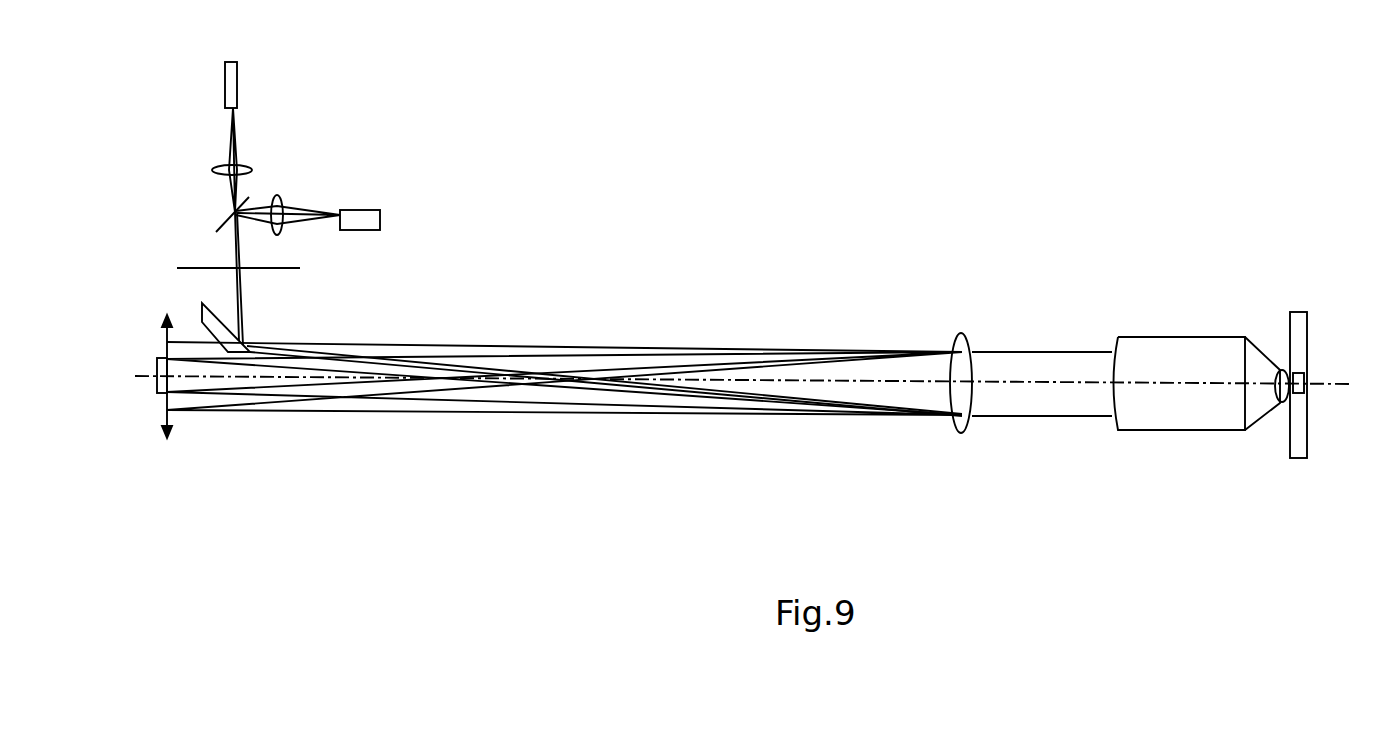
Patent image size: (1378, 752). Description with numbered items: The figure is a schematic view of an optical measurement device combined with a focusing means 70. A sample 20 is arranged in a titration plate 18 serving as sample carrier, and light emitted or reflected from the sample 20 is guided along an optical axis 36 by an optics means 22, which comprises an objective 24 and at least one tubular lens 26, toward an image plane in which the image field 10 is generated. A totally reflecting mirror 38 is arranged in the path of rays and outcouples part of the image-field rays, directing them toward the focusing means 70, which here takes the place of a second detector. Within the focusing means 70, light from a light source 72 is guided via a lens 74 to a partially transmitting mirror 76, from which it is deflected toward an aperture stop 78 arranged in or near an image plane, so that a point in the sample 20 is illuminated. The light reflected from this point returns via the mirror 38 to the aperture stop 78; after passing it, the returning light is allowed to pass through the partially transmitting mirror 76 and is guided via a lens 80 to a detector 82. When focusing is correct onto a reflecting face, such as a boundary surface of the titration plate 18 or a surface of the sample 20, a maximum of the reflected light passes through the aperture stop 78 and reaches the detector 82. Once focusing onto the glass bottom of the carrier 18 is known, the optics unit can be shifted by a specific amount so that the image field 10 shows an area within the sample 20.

The image field 10 is at (163, 347).
The titration plate 18 is at (1297, 325).
The sample 20 is at (1308, 383).
The optics means 22 is at (1053, 326).
The objective 24 is at (1197, 355).
The tubular lens 26 is at (962, 340).
The optical axis 36 is at (1047, 390).
The totally reflecting mirror 38 is at (210, 323).
The focusing means 70 is at (167, 150).
The light source 72 is at (372, 212).
The lens 74 is at (283, 202).
The partially transmitting mirror 76 is at (250, 197).
The aperture stop 78 is at (192, 268).
The lens 80 is at (217, 167).
The detector 82 is at (235, 77).